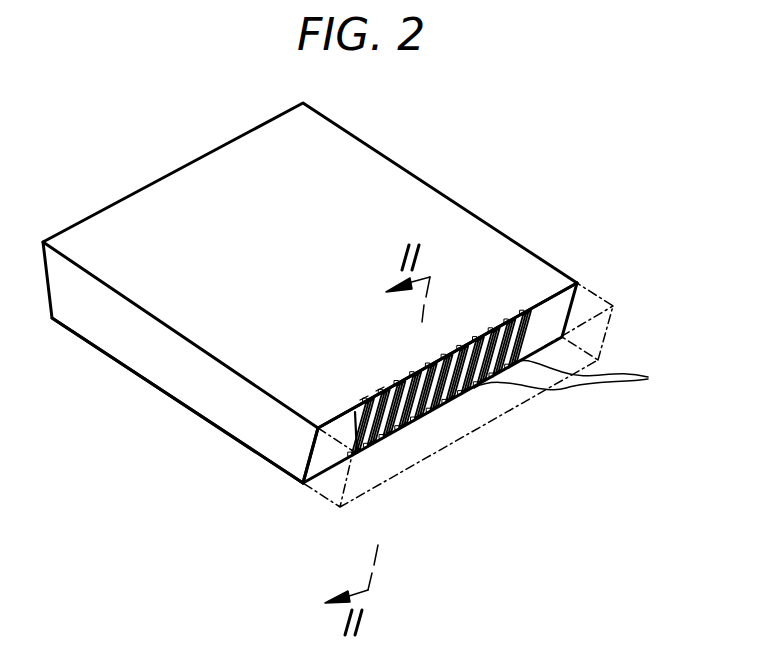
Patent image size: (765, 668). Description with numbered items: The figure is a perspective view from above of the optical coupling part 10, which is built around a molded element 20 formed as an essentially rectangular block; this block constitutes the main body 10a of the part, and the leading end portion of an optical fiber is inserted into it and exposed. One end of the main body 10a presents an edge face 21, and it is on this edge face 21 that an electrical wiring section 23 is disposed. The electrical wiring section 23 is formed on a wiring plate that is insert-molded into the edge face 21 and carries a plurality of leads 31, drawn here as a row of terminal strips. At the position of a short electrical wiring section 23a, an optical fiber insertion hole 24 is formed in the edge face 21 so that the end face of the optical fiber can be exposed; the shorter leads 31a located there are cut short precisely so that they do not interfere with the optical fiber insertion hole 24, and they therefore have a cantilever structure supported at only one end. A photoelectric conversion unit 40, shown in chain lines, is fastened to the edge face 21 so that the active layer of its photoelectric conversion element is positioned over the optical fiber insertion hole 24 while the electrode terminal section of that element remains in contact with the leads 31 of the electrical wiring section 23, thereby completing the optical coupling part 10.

The optical coupling part 10 is at (603, 231).
The molded element 20 is at (96, 362).
The main body 10a is at (182, 385).
The edge face 21 is at (316, 458).
The electrical wiring section 23 is at (537, 317).
The short electrical wiring section 23a is at (355, 412).
The shorter leads 31a is at (387, 383).
The leads 31 is at (391, 385).
The optical fiber insertion hole 24 is at (575, 375).
The photoelectric conversion unit 40 is at (592, 413).